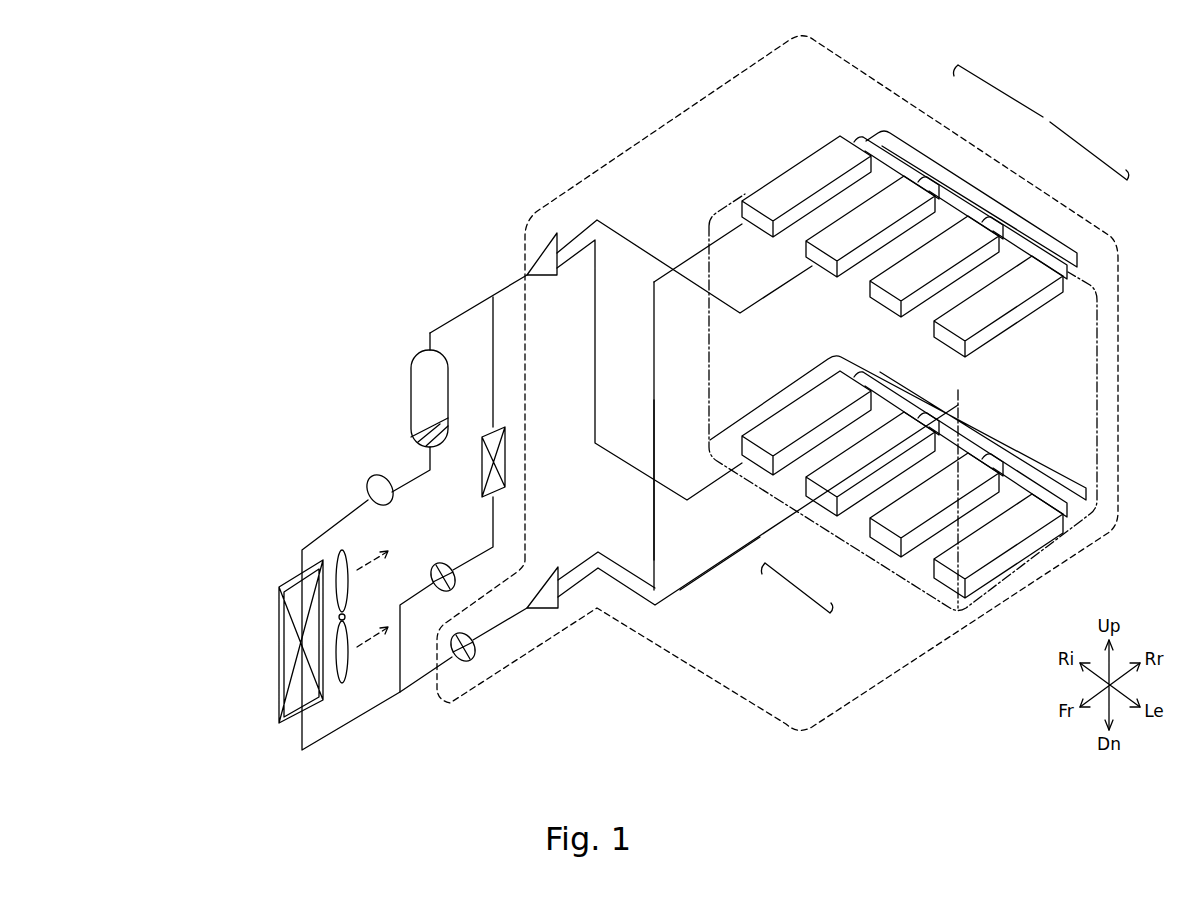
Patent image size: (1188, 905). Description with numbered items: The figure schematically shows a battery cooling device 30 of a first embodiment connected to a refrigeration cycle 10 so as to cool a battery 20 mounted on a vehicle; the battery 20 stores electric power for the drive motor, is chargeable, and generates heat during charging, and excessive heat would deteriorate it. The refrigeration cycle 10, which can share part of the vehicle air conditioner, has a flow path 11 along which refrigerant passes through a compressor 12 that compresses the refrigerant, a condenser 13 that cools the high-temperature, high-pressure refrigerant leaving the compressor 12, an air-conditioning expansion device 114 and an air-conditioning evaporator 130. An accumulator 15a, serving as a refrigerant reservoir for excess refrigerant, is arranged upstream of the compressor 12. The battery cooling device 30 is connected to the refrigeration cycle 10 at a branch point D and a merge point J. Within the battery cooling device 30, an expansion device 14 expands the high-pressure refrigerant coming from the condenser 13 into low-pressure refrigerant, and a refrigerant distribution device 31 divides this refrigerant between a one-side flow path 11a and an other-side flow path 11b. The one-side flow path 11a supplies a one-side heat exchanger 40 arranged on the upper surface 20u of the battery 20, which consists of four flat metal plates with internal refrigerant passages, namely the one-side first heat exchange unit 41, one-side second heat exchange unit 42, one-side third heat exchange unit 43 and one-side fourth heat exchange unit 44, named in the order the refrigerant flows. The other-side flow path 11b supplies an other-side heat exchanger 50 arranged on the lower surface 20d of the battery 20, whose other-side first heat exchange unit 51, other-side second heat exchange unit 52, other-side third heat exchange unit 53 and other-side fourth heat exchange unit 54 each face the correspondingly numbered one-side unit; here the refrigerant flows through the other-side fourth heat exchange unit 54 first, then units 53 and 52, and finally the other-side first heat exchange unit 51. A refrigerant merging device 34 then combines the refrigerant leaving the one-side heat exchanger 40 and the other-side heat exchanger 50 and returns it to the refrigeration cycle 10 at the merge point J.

The refrigeration cycle 10 is at (437, 200).
The battery cooling device 30 is at (643, 130).
The battery 20 is at (1097, 383).
The upper surface 20u is at (1093, 272).
The lower surface 20d is at (1093, 545).
The flow path 11 is at (516, 636).
The one-side flow path 11a is at (654, 530).
The other-side flow path 11b is at (705, 577).
The refrigerant merging device 34 is at (543, 280).
The refrigerant distribution device 31 is at (555, 608).
The merge point J is at (493, 297).
The accumulator 15a is at (411, 395).
The air-conditioning evaporator 130 is at (482, 465).
The compressor 12 is at (370, 486).
The air-conditioning expansion device 114 is at (436, 566).
The expansion device 14 is at (465, 661).
The branch point D is at (400, 694).
The condenser 13 is at (283, 597).
The one-side heat exchanger 40 is at (1041, 122).
The one-side first heat exchange unit 41 is at (847, 132).
The one-side fourth heat exchange unit 44 is at (917, 183).
The one-side third heat exchange unit 43 is at (1005, 233).
The one-side second heat exchange unit 42 is at (1053, 262).
The other-side heat exchanger 50 is at (796, 603).
The other-side first heat exchange unit 51 is at (762, 472).
The other-side fourth heat exchange unit 54 is at (822, 502).
The other-side third heat exchange unit 53 is at (882, 536).
The other-side second heat exchange unit 52 is at (945, 578).